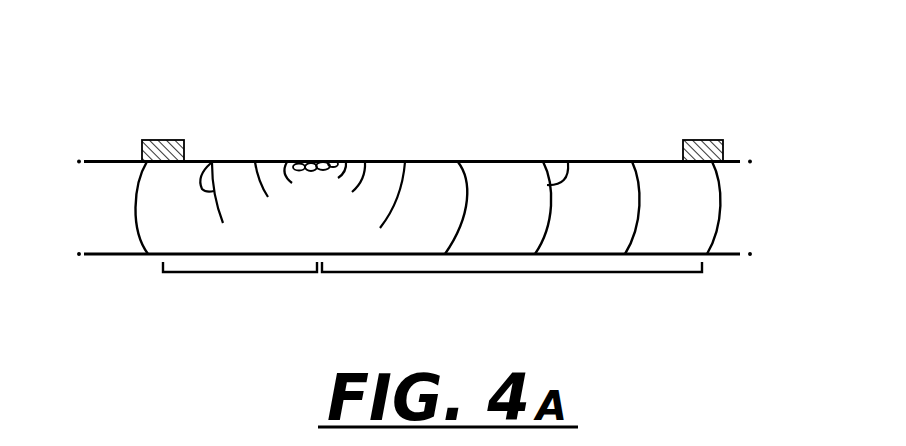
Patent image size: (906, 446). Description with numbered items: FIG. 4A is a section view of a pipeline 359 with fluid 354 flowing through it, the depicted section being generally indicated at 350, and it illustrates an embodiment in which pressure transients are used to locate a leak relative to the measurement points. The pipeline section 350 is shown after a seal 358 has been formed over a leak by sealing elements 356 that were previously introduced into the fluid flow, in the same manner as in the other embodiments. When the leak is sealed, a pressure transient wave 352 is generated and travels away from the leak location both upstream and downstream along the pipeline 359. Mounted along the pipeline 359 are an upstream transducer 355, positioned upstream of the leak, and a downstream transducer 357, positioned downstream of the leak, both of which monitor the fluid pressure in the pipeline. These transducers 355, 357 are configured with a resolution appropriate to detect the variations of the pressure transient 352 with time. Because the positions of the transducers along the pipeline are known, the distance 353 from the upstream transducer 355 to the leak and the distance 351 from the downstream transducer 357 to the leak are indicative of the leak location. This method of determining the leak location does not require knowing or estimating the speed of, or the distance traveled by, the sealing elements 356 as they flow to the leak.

The pipeline section 350 is at (437, 56).
The distance from downstream transducer to leak 351 is at (495, 275).
The pressure transient wave 352 is at (210, 161).
The distance from upstream transducer to leak 353 is at (242, 274).
The fluid 354 is at (100, 208).
The upstream transducer 355 is at (172, 140).
The sealing elements 356 is at (303, 170).
The downstream transducer 357 is at (713, 140).
The seal 358 is at (323, 161).
The pipeline 359 is at (118, 256).